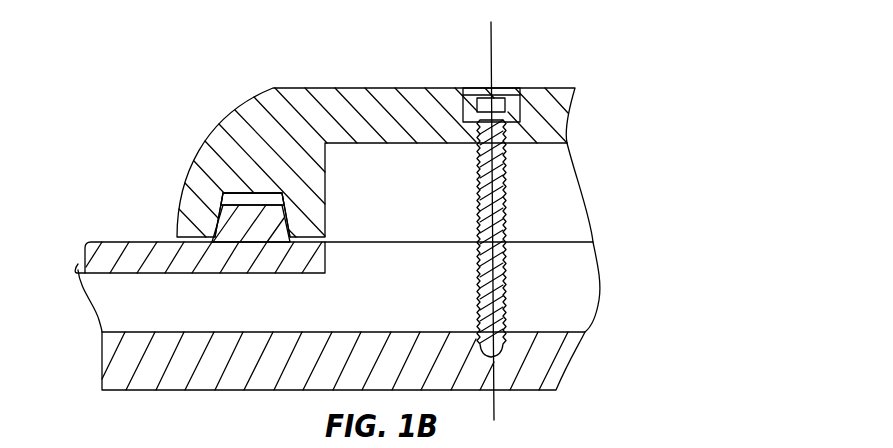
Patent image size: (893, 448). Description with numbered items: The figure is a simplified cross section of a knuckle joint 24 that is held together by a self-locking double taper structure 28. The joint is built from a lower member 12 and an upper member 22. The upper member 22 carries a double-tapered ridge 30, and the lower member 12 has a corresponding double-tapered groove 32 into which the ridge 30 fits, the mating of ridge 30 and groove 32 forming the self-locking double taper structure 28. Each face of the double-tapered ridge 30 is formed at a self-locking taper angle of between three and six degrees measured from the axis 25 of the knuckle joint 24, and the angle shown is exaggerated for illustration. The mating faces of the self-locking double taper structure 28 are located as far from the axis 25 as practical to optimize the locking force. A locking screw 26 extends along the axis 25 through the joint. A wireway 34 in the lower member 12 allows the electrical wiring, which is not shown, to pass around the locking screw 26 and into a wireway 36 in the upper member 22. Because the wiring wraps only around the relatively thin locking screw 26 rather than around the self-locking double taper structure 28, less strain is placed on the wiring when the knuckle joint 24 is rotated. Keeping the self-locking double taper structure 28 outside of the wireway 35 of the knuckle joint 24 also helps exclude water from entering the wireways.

The lower member 12 is at (347, 88).
The upper member 22 is at (142, 390).
The knuckle joint 24 is at (536, 46).
The axis 25 is at (491, 45).
The locking screw 26 is at (471, 88).
The self-locking double taper structure 28 is at (290, 227).
The double-tapered ridge 30 is at (237, 221).
The double-tapered groove 32 is at (253, 195).
The wireway 34 is at (562, 209).
The wireway 35 is at (428, 274).
The wireway 36 is at (226, 314).